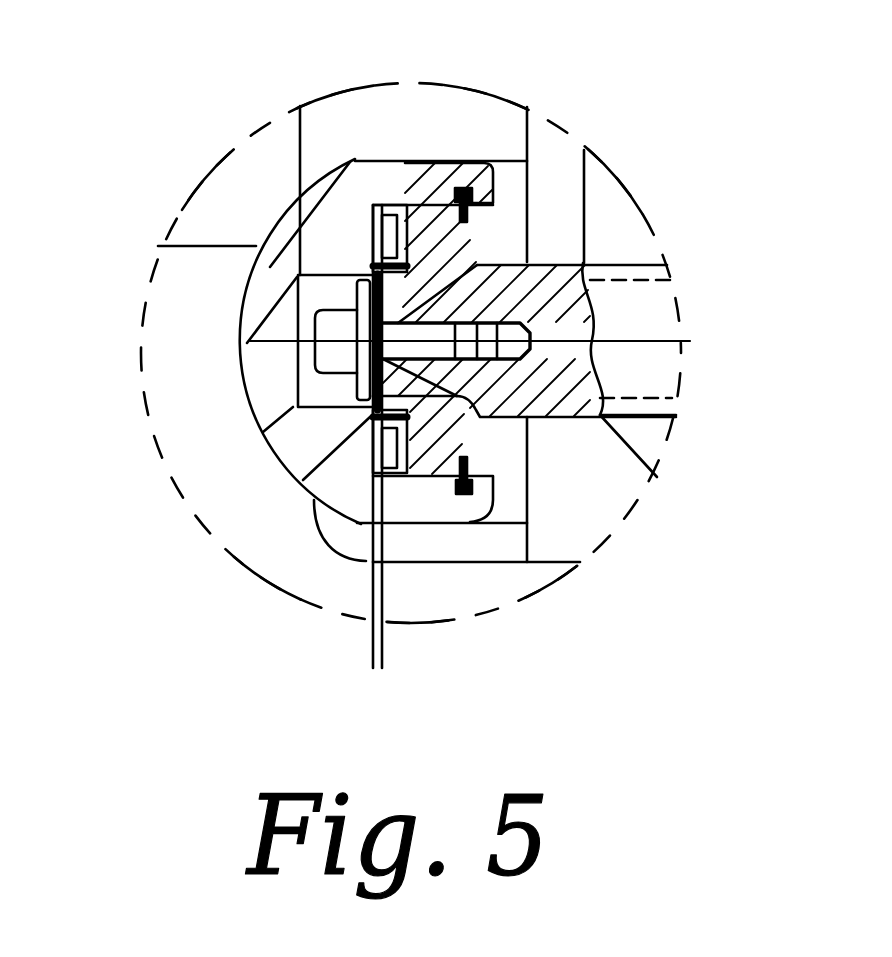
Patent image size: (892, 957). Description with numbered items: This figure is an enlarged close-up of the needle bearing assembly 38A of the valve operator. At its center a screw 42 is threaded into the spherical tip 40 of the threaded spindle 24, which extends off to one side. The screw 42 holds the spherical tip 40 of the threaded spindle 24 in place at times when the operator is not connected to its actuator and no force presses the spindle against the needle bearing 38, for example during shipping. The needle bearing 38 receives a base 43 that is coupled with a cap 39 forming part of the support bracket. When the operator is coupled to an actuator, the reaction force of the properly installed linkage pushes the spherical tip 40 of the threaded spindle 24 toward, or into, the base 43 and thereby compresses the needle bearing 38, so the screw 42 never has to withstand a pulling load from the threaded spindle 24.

The threaded spindle 24 is at (632, 318).
The needle bearing 38 is at (395, 212).
The needle bearing assembly 38A is at (181, 562).
The cap 39 is at (265, 382).
The spherical tip 40 is at (447, 292).
The screw 42 is at (338, 323).
The base 43 is at (427, 452).